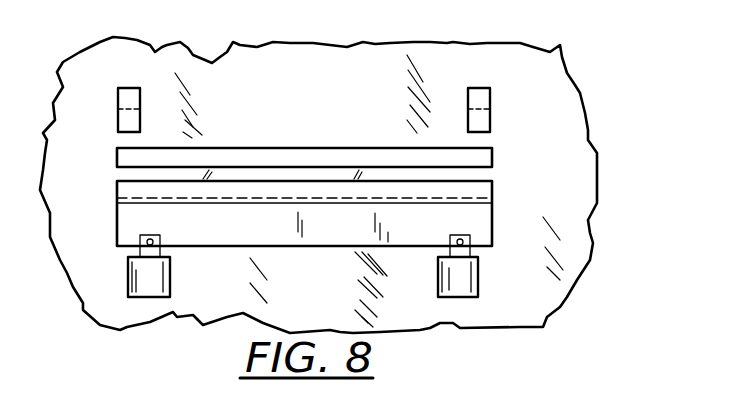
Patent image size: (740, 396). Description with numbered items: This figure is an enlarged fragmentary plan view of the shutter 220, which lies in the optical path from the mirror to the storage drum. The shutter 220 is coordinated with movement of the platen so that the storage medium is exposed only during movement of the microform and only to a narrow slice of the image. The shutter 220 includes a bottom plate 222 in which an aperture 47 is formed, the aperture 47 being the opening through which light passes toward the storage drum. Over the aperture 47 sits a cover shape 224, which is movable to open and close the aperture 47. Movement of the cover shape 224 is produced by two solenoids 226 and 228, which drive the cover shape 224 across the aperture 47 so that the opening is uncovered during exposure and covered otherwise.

The aperture 47 is at (250, 148).
The shutter 220 is at (112, 228).
The bottom plate 222 is at (573, 133).
The cover shape 224 is at (493, 198).
The solenoid 226 is at (479, 276).
The solenoid 228 is at (171, 272).